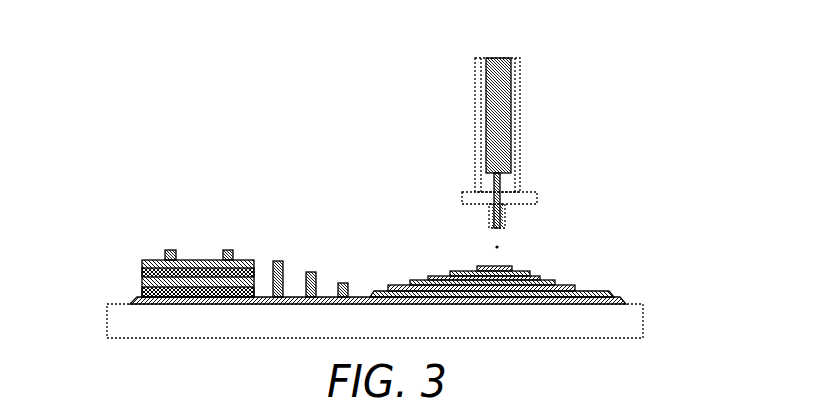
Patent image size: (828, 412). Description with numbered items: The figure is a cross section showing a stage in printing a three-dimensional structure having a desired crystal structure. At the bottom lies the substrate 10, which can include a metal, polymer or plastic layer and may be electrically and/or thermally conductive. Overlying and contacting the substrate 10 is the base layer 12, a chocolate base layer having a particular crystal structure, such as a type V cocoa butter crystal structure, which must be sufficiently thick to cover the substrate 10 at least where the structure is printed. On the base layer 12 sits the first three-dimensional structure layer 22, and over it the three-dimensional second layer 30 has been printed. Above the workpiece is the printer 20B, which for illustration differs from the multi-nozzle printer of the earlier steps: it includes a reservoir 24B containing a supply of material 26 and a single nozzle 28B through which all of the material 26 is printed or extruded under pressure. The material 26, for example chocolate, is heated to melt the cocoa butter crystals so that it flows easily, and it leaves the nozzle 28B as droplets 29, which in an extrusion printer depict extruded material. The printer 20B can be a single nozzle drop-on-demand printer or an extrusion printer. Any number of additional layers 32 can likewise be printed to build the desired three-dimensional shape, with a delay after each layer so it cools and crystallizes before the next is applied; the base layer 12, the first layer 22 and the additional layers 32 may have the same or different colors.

The substrate 10 is at (107, 316).
The base layer 12 is at (131, 298).
The additional layers 32 is at (133, 287).
The first 3D structure layer 22 is at (604, 294).
The 3D second layer 30 is at (587, 289).
The printer 20B is at (522, 84).
The reservoir 24B is at (517, 127).
The material 26 is at (492, 93).
The single nozzle 28B is at (502, 229).
The droplets 29 is at (494, 247).